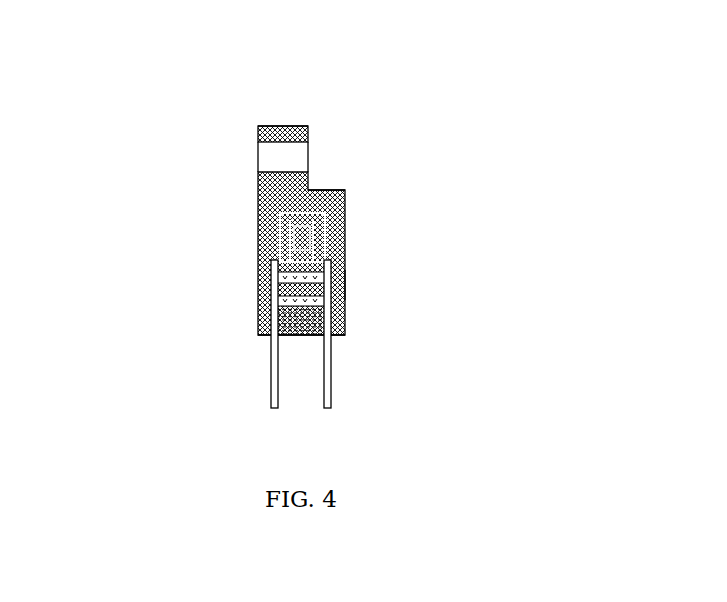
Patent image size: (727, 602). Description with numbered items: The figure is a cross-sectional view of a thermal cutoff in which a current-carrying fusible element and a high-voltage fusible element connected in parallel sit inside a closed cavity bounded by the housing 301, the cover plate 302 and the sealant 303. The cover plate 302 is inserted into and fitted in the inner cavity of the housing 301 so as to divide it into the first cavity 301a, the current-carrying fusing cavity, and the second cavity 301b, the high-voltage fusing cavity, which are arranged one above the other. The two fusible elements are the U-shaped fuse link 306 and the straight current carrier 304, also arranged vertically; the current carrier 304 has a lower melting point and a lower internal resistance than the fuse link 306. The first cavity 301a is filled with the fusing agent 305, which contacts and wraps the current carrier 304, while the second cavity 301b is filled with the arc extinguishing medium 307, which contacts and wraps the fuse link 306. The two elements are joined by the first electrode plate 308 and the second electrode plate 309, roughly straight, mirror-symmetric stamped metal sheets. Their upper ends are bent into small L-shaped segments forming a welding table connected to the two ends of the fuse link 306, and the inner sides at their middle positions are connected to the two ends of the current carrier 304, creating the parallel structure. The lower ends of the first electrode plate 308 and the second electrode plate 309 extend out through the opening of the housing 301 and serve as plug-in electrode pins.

The housing 301 is at (308, 127).
The first cavity 301a is at (345, 282).
The second cavity 301b is at (345, 192).
The cover plate 302 is at (345, 222).
The sealant 303 is at (335, 335).
The current carrier 304 is at (258, 282).
The fusing agent 305 is at (258, 240).
The fuse link 306 is at (258, 193).
The arc extinguishing medium 307 is at (258, 172).
The first electrode plate 308 is at (258, 315).
The second electrode plate 309 is at (345, 317).